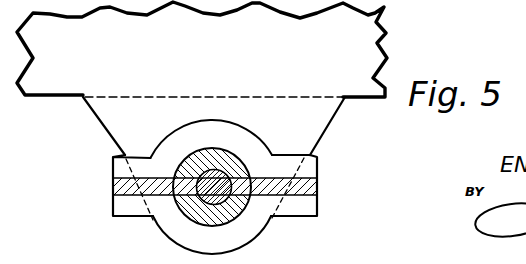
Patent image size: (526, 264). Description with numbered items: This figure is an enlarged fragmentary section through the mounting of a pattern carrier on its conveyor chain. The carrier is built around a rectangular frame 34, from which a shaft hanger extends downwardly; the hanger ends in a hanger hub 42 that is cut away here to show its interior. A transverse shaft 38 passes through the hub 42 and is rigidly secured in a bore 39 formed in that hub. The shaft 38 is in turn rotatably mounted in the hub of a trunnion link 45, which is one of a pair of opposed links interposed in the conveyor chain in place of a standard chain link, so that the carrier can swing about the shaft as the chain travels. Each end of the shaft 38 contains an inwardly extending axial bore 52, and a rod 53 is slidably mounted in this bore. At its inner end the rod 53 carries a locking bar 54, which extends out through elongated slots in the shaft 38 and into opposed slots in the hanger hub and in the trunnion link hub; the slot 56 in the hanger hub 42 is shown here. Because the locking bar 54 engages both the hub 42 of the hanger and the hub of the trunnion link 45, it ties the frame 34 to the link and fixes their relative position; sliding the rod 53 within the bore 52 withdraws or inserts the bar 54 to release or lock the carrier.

The rectangular frame 34 is at (362, 48).
The transverse shaft 38 is at (193, 148).
The bore 39 is at (214, 185).
The hanger hub 42 is at (213, 126).
The trunnion link 45 is at (307, 132).
The axial bore 52 is at (243, 246).
The rod 53 is at (198, 206).
The locking bar 54 is at (312, 190).
The slot 56 is at (138, 178).